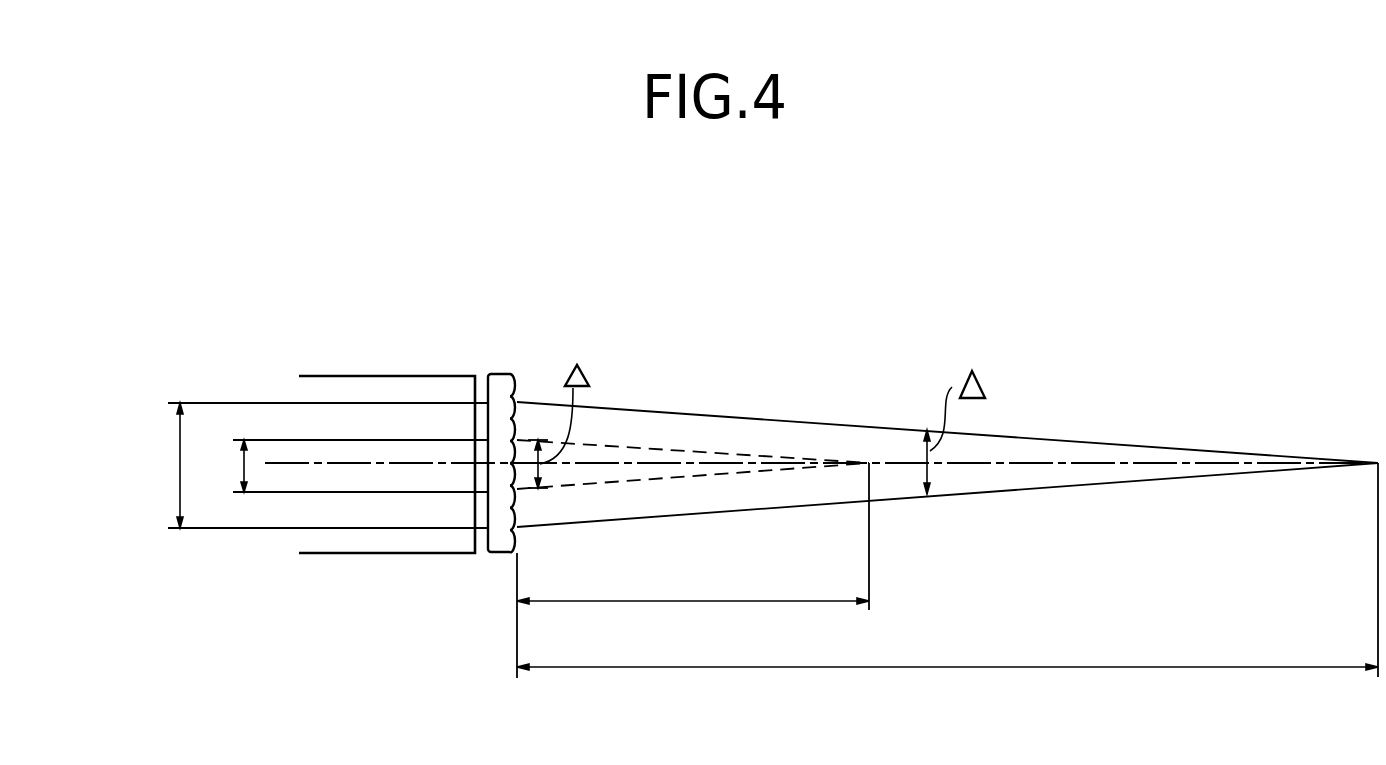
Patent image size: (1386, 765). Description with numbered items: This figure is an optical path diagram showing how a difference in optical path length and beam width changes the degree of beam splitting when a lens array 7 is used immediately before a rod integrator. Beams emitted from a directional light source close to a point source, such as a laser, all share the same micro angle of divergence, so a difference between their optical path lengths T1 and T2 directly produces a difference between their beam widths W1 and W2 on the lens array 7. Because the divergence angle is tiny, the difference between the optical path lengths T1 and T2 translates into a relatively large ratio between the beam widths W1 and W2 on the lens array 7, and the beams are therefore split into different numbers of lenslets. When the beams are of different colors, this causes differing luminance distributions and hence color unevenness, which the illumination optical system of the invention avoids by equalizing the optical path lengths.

The lens array 7 is at (497, 373).
The beam width W1 is at (150, 465).
The beam width W2 is at (217, 466).
The optical path length T1 is at (947, 647).
The optical path length T2 is at (693, 582).